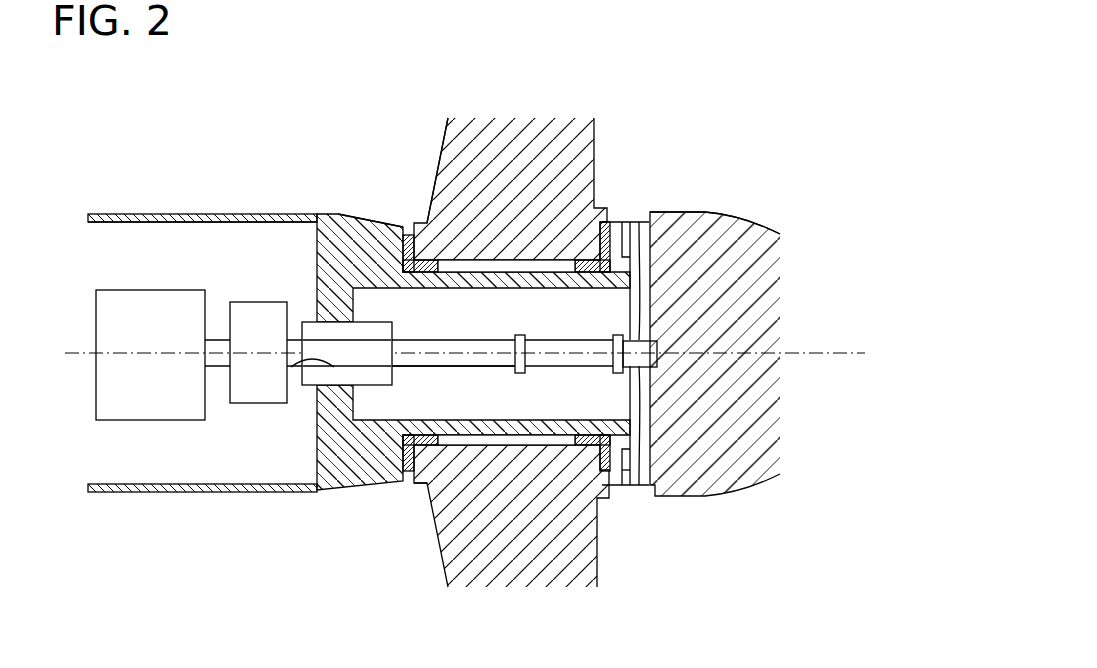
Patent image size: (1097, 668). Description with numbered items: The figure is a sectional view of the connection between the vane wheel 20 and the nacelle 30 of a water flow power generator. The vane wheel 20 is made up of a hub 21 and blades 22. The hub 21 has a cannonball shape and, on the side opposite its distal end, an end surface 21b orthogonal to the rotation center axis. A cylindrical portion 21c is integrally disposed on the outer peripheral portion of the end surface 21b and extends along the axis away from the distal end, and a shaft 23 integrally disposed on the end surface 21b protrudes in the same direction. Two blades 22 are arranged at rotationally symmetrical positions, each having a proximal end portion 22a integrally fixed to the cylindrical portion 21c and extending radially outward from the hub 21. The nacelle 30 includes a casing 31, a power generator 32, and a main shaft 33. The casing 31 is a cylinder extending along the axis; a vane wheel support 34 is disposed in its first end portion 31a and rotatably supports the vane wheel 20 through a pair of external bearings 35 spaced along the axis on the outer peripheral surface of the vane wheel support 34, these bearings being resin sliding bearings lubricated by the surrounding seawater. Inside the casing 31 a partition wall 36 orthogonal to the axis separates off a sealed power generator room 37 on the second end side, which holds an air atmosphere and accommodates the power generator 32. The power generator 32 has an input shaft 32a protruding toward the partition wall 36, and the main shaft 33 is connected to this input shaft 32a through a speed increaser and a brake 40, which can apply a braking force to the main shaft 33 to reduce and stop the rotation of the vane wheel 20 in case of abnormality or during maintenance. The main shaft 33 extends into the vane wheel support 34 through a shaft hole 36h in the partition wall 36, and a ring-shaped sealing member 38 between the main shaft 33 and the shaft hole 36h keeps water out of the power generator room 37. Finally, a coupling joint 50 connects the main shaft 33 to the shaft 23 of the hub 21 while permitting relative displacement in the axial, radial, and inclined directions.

The vane wheel 20 is at (708, 212).
The hub 21 is at (767, 227).
The end surface 21b is at (637, 487).
The cylindrical portion 21c is at (420, 486).
The blade 22 is at (596, 162).
The proximal end portion 22a is at (431, 203).
The shaft 23 is at (634, 222).
The nacelle 30 is at (246, 500).
The casing 31 is at (237, 214).
The first end portion 31a is at (402, 231).
The power generator 32 is at (138, 289).
The input shaft 32a is at (214, 368).
The main shaft 33 is at (428, 368).
The vane wheel support 34 is at (547, 270).
The external bearing 35 is at (403, 243).
The partition wall 36 is at (316, 430).
The shaft hole 36h is at (291, 369).
The power generator room 37 is at (247, 223).
The sealing member 38 is at (336, 322).
The brake 40 is at (262, 301).
The coupling joint 50 is at (577, 368).